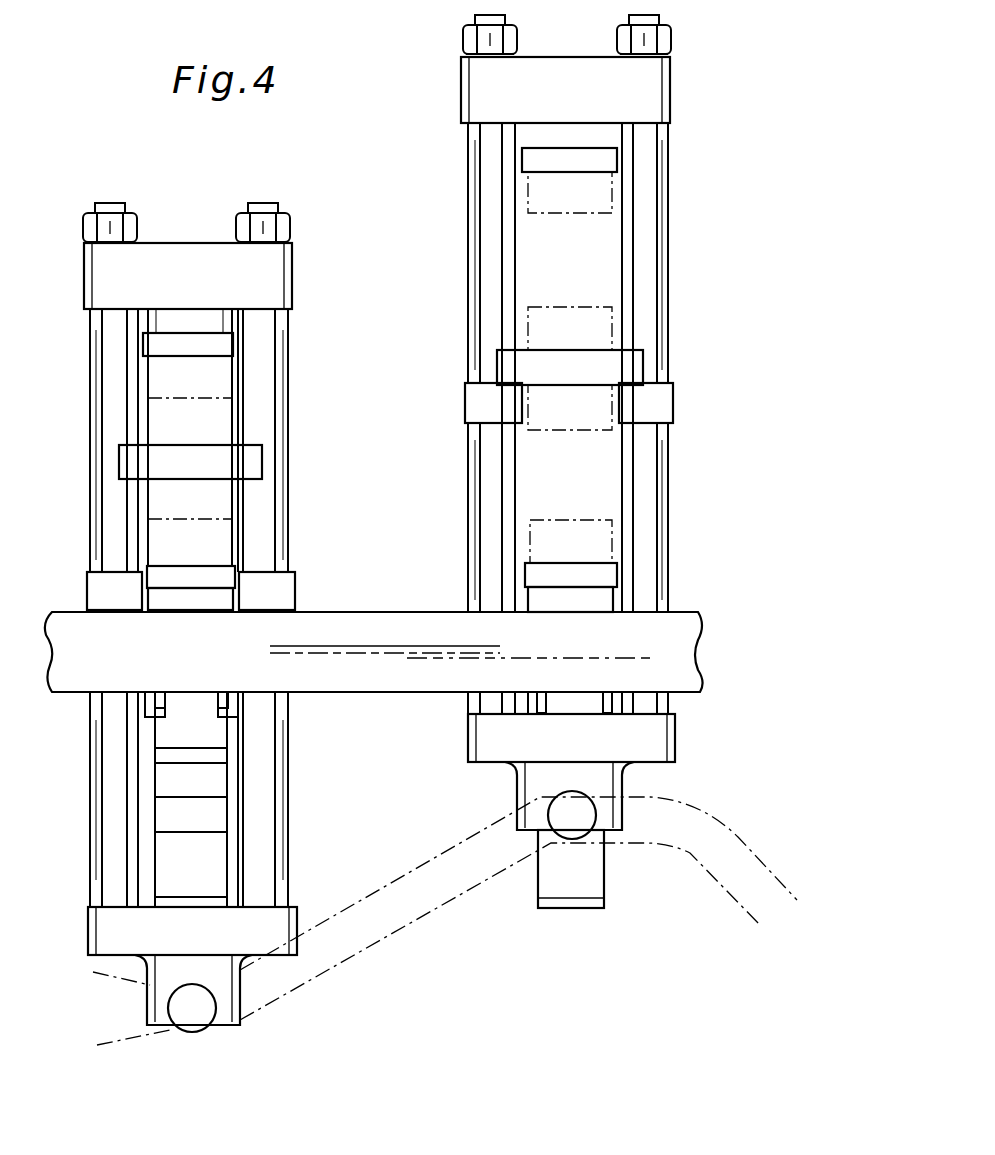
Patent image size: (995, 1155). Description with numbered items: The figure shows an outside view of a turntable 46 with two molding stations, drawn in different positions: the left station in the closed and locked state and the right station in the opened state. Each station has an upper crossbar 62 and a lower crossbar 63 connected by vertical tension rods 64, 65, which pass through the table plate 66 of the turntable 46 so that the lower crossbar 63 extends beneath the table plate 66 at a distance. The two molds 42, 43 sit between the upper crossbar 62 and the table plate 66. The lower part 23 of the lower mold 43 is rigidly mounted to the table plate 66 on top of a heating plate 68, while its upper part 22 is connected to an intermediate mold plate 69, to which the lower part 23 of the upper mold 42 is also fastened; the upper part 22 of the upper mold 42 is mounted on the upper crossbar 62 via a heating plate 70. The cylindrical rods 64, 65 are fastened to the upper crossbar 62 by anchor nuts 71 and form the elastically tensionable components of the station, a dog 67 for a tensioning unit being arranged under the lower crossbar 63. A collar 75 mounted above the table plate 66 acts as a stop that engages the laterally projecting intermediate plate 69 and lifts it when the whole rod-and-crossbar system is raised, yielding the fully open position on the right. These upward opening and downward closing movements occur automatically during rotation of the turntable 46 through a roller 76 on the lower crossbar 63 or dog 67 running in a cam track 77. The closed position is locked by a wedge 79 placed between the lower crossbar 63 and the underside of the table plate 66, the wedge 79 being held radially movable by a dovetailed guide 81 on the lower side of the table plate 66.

The upper part 22 is at (160, 369).
The lower part 23 is at (162, 421).
The upper mold 42 is at (240, 397).
The lower mold 43 is at (240, 519).
The turntable 46 is at (398, 700).
The upper crossbar 62 is at (172, 262).
The lower crossbar 63 is at (105, 928).
The tension rod 64 is at (113, 409).
The tension rod 65 is at (268, 421).
The table plate 66 is at (405, 635).
The dog 67 is at (228, 990).
The heating plate 68 is at (203, 578).
The intermediate mold plate 69 is at (240, 460).
The heating plate 70 is at (222, 346).
The anchor nut 71 is at (100, 222).
The collar 75 is at (113, 595).
The roller 76 is at (190, 1018).
The cam track 77 is at (415, 915).
The wedge 79 is at (185, 730).
The dovetailed guide 81 is at (148, 708).